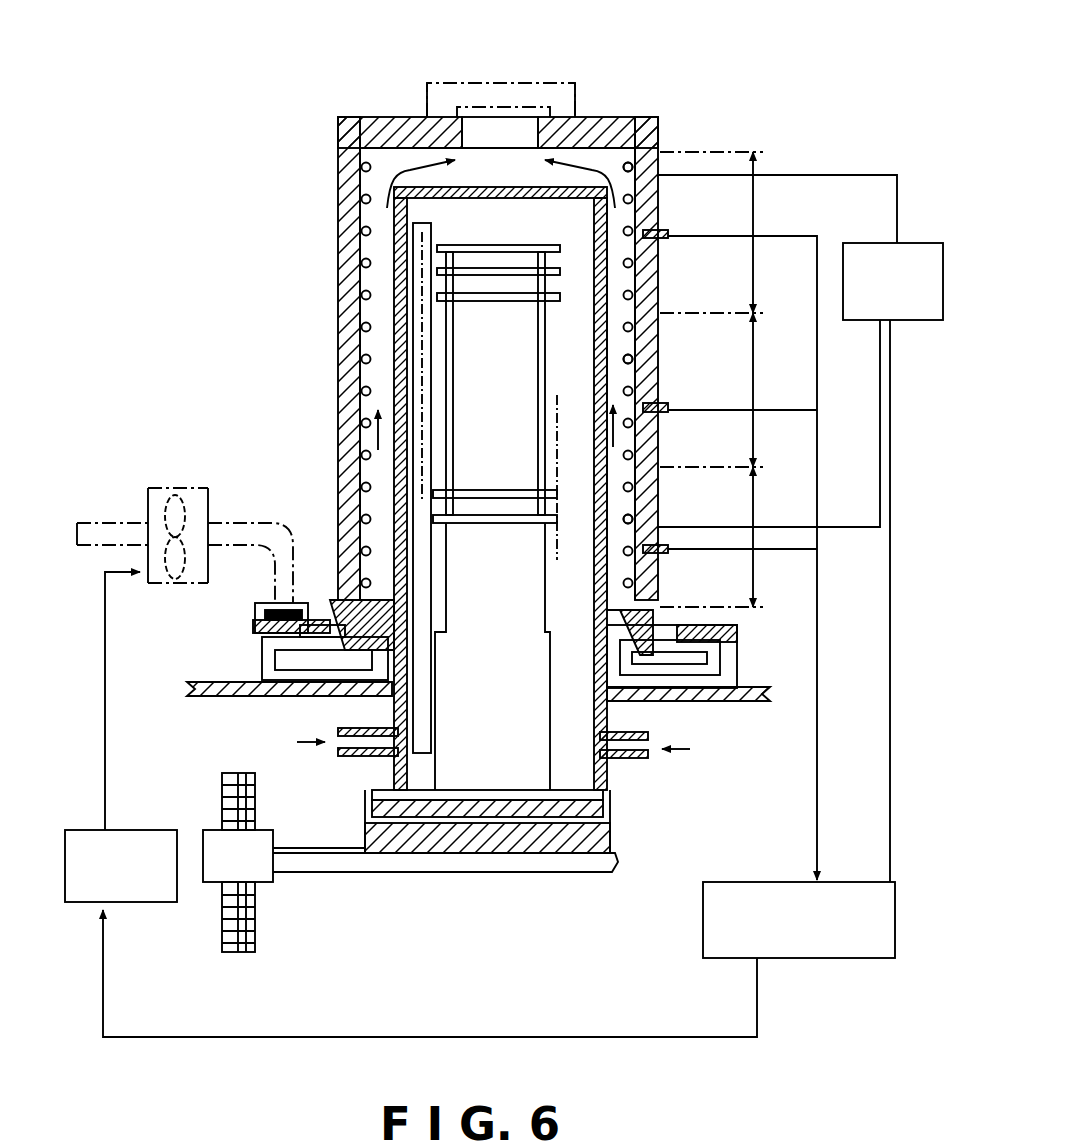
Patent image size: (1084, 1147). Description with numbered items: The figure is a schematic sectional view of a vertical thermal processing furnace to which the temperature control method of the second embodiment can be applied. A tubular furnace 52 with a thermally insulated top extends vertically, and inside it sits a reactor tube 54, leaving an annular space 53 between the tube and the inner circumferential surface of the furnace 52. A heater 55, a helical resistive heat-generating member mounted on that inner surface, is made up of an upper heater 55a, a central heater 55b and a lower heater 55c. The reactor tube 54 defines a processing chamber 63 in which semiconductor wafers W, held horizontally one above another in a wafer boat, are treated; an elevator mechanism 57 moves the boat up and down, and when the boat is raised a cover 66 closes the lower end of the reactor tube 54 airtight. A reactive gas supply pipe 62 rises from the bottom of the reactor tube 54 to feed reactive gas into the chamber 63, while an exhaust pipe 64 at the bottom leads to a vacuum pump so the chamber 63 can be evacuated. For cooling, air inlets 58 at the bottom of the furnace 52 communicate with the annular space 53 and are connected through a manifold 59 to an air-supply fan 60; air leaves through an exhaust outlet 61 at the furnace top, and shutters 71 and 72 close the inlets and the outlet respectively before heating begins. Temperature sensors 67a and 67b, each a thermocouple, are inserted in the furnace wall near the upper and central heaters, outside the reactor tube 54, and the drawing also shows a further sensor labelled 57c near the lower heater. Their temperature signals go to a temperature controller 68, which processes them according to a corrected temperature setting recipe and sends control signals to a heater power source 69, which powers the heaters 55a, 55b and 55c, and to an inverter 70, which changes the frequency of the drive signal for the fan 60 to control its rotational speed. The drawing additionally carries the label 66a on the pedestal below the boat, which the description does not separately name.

The tubular furnace 52 is at (657, 205).
The annular space 53 is at (392, 336).
The reactor tube 54 is at (612, 343).
The heater 55 is at (362, 233).
The upper heater 55a is at (658, 132).
The central heater 55b is at (633, 360).
The lower heater 55c is at (633, 518).
The elevator mechanism 57 is at (273, 878).
The lower thermocouple 57c is at (664, 554).
The air inlet 58 is at (340, 606).
The manifold 59 is at (262, 662).
The air-supply fan 60 is at (190, 488).
The exhaust outlet 61 is at (540, 130).
The reactive gas supply pipe 62 is at (345, 762).
The processing chamber 63 is at (570, 464).
The exhaust pipe 64 is at (640, 760).
The cover 66 is at (610, 840).
The pedestal 66a is at (540, 445).
The temperature sensor 67a is at (664, 240).
The temperature sensor 67b is at (664, 413).
The temperature controller 68 is at (745, 882).
The heater power source 69 is at (858, 322).
The inverter 70 is at (120, 832).
The shutter 71 is at (256, 616).
The shutter 72 is at (505, 83).
The semiconductor wafer W is at (462, 245).